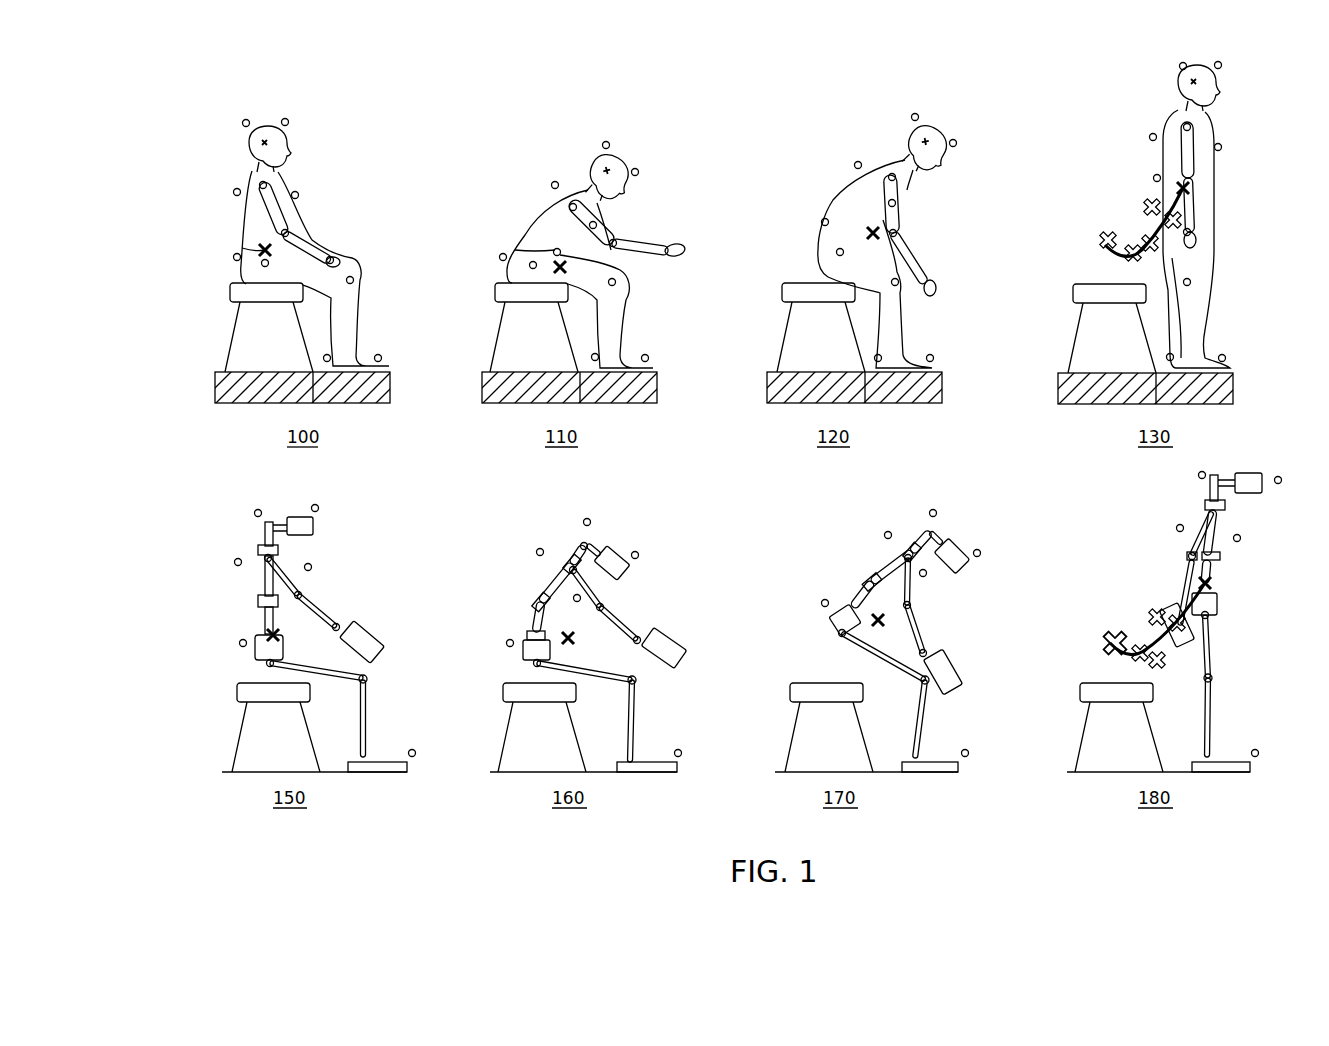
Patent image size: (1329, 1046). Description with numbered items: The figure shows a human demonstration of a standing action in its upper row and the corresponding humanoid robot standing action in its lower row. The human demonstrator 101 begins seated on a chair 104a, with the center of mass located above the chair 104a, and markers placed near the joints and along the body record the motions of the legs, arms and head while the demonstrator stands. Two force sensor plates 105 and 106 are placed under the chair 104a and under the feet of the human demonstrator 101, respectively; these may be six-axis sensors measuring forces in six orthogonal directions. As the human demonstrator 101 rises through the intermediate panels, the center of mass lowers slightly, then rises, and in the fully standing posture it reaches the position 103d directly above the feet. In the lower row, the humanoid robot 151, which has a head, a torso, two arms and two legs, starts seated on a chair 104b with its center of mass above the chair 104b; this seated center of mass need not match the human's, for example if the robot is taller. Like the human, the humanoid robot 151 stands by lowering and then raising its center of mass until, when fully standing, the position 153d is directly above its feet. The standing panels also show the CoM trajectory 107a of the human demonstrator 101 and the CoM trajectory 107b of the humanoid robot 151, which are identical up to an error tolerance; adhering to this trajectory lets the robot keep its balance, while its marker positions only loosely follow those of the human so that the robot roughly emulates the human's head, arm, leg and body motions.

The human demonstrator 101 is at (275, 122).
The CoM of the human demonstrator 103d is at (1197, 188).
The chair 104a is at (230, 290).
The chair 104b is at (237, 690).
The force sensor plate 105 is at (215, 380).
The force sensor plate 106 is at (383, 368).
The CoM trajectory of the human demonstrator 107a is at (1200, 242).
The CoM trajectory of the humanoid robot 107b is at (1208, 623).
The humanoid robot 151 is at (265, 538).
The CoM of the humanoid robot 153d is at (1222, 583).